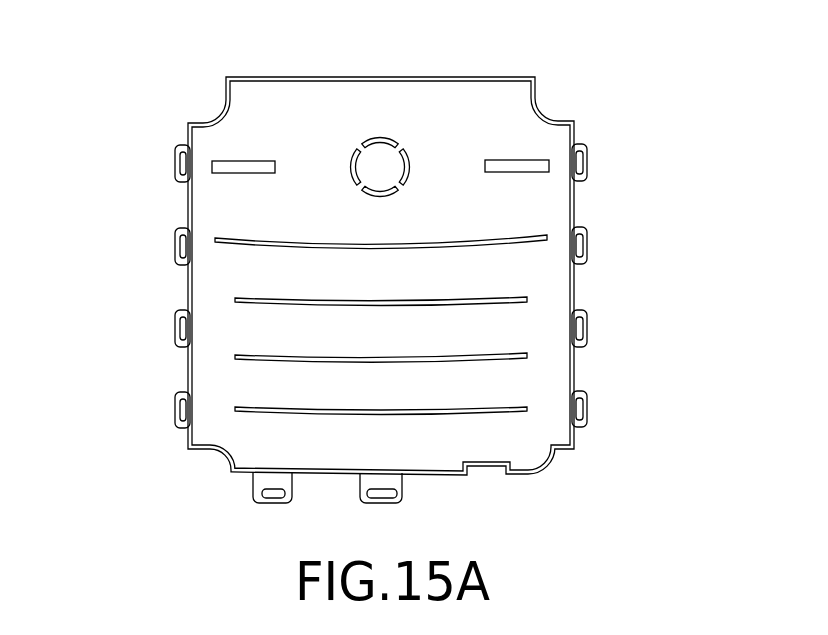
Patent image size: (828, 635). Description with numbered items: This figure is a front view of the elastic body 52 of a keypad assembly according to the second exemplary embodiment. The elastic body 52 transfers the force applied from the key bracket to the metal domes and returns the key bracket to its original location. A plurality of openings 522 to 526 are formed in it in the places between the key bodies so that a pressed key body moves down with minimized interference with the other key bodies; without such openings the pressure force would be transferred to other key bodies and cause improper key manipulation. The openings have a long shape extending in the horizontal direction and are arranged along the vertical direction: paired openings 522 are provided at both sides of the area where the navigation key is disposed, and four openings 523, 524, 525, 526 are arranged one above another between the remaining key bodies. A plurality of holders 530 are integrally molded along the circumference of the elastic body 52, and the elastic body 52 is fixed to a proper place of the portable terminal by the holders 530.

The elastic body 52 is at (158, 294).
The openings 522 is at (253, 163).
The opening 523 is at (527, 236).
The opening 524 is at (512, 297).
The opening 525 is at (510, 355).
The opening 526 is at (513, 404).
The holders 530 is at (587, 158).